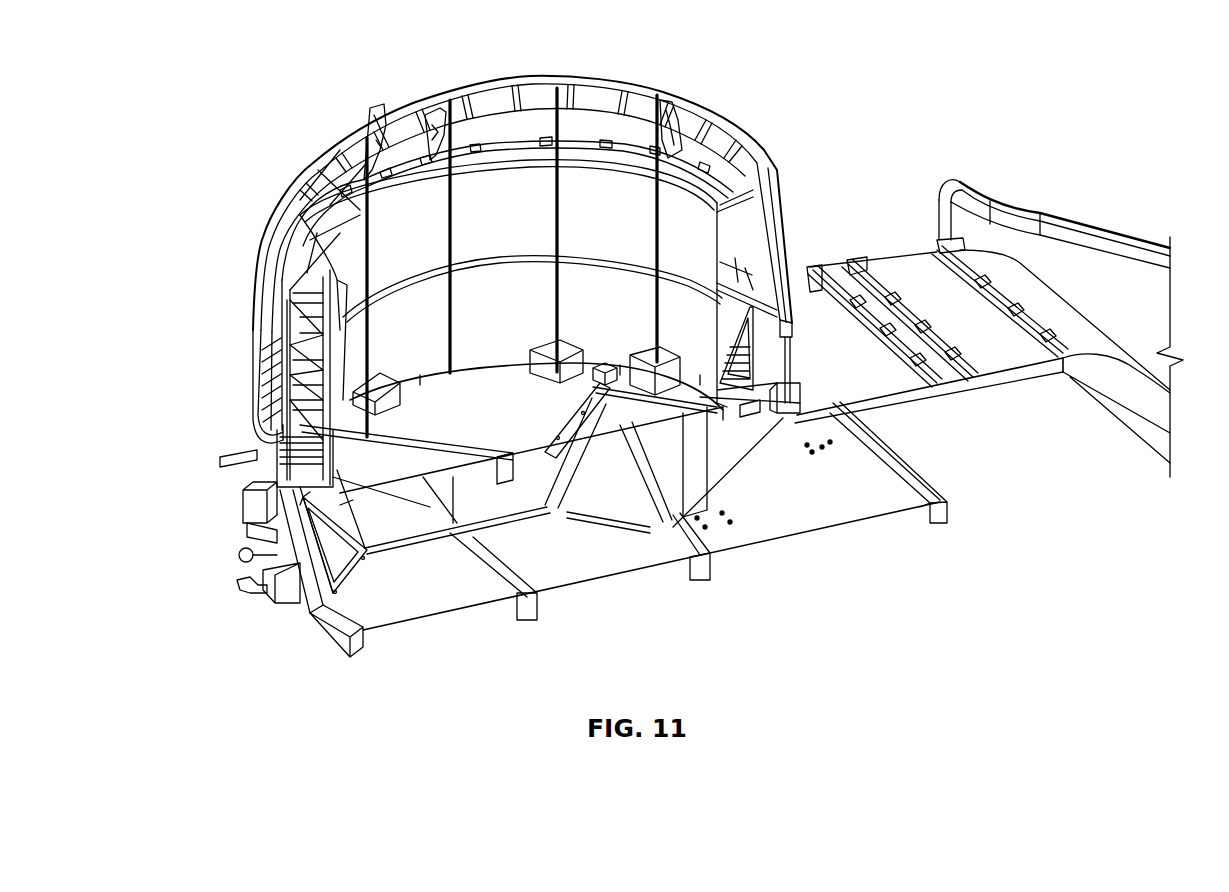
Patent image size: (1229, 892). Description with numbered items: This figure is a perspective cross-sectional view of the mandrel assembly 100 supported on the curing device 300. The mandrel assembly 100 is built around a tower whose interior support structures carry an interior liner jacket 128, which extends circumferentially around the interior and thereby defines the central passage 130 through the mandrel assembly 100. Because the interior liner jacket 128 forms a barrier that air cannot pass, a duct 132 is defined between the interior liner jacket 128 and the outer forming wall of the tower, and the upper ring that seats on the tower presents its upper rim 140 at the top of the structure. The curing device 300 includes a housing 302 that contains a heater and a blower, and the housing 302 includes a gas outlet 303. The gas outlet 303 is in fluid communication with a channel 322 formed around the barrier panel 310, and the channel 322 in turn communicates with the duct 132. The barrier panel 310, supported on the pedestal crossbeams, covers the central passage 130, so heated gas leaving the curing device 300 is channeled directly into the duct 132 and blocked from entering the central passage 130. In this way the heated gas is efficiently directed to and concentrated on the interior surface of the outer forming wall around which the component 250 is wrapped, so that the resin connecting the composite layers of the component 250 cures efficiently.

The mandrel assembly 100 is at (743, 130).
The interior liner jacket 128 is at (523, 210).
The central passage 130 is at (577, 200).
The duct 132 is at (260, 262).
The upper rim 140 is at (284, 405).
The component 250 is at (259, 352).
The barrier panel 310 is at (483, 410).
The channel 322 is at (750, 407).
The housing 302 is at (907, 260).
The gas outlet 303 is at (780, 410).
The curing device 300 is at (1035, 200).